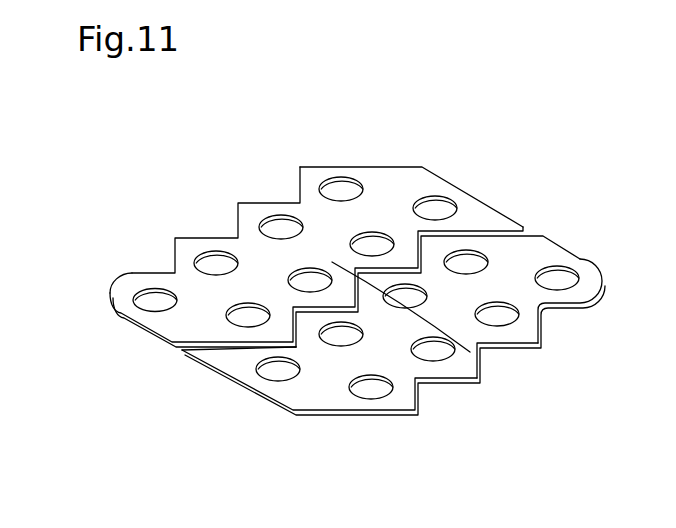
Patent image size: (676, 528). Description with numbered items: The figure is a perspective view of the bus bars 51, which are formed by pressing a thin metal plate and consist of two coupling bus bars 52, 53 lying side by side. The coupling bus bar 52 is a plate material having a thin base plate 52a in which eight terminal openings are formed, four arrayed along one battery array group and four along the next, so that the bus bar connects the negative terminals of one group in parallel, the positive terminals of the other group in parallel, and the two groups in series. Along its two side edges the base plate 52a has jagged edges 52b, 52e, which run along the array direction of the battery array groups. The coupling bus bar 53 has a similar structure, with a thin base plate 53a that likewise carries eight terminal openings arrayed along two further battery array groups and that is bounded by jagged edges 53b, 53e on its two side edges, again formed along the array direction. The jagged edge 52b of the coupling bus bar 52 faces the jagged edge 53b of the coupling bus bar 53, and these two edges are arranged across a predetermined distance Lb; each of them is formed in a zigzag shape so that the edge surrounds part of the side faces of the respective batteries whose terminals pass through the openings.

The bus bars 51 is at (647, 214).
The coupling bus bar 52 is at (470, 196).
The base plate 52a is at (262, 252).
The jagged edge 52b is at (416, 236).
The jagged edge 52e is at (298, 187).
The coupling bus bar 53 is at (583, 260).
The base plate 53a is at (398, 352).
The jagged edge 53b is at (480, 354).
The jagged edge 53e is at (562, 312).
The predetermined distance Lb is at (355, 266).